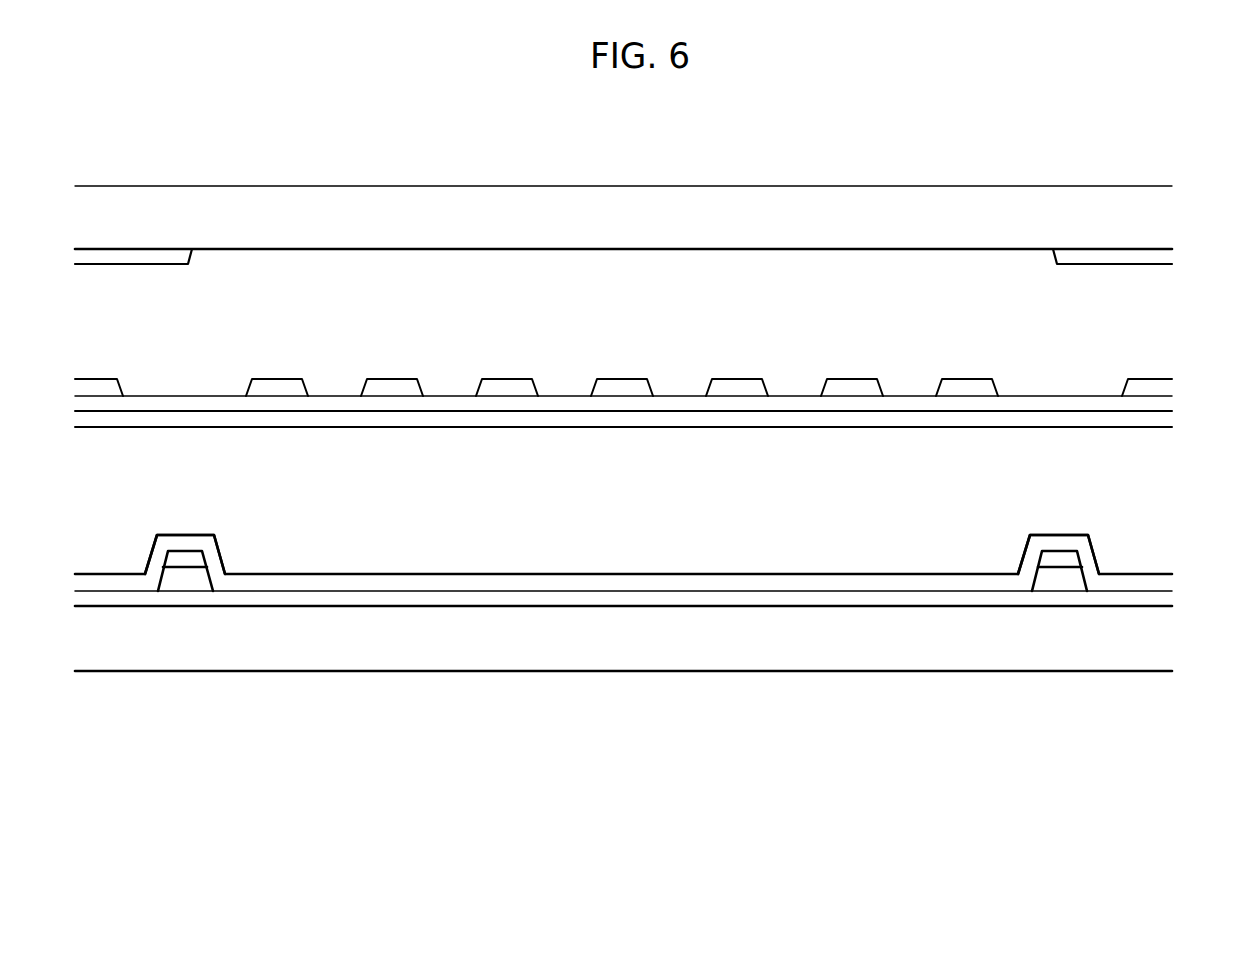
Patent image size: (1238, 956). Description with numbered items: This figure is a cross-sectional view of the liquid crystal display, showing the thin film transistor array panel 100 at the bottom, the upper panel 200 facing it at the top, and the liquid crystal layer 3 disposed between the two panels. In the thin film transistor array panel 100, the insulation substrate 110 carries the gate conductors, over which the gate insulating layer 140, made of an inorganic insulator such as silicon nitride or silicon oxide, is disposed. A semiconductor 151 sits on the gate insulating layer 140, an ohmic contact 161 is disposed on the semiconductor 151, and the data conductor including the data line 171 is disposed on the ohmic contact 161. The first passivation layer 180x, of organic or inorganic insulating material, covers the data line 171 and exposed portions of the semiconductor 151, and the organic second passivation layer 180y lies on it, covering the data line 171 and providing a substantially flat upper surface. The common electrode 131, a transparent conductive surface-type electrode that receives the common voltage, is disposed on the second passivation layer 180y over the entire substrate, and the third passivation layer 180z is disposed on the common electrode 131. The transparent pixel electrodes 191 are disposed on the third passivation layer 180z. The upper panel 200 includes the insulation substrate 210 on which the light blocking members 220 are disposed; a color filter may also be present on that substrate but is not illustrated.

The liquid crystal layer 3 is at (1180, 268).
The thin film transistor array panel 100 is at (1180, 385).
The insulation substrate 110 is at (633, 650).
The common electrode 131 is at (909, 418).
The gate insulating layer 140 is at (735, 598).
The semiconductor 151 is at (185, 572).
The ohmic contact 161 is at (202, 583).
The data line 171 is at (180, 557).
The first passivation layer 180x is at (503, 582).
The second passivation layer 180y is at (333, 458).
The third passivation layer 180z is at (1078, 402).
The pixel electrode 191 is at (603, 387).
The upper panel 200 is at (1180, 186).
The insulation substrate 210 is at (492, 197).
The light blocking member 220 is at (137, 258).